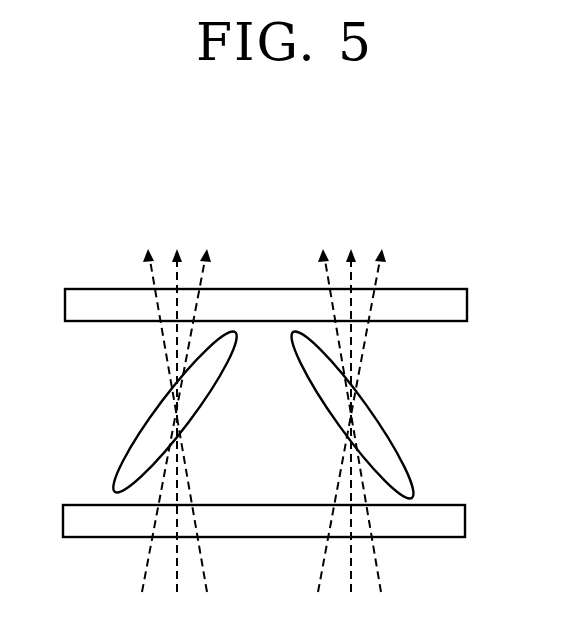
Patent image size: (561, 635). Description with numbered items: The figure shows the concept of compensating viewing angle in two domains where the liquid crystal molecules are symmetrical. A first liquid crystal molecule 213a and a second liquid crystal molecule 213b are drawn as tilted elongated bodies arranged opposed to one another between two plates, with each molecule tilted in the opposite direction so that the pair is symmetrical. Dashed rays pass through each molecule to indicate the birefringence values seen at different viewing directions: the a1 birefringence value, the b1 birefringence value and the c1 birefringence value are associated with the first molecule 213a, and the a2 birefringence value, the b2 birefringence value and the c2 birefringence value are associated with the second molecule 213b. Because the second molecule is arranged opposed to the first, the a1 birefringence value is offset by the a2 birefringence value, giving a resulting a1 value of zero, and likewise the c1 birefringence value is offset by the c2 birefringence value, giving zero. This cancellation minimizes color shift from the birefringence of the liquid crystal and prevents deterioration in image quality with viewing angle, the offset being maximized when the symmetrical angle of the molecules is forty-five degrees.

The first lens 213a is at (130, 455).
The second lens 213b is at (397, 460).
The a1 birefringence value a1 is at (171, 409).
The second light ray b1 is at (177, 409).
The c1 birefringence value c1 is at (179, 409).
The a2 birefringence value a2 is at (346, 409).
The fifth light ray b2 is at (352, 409).
The c2 birefringence value c2 is at (355, 409).